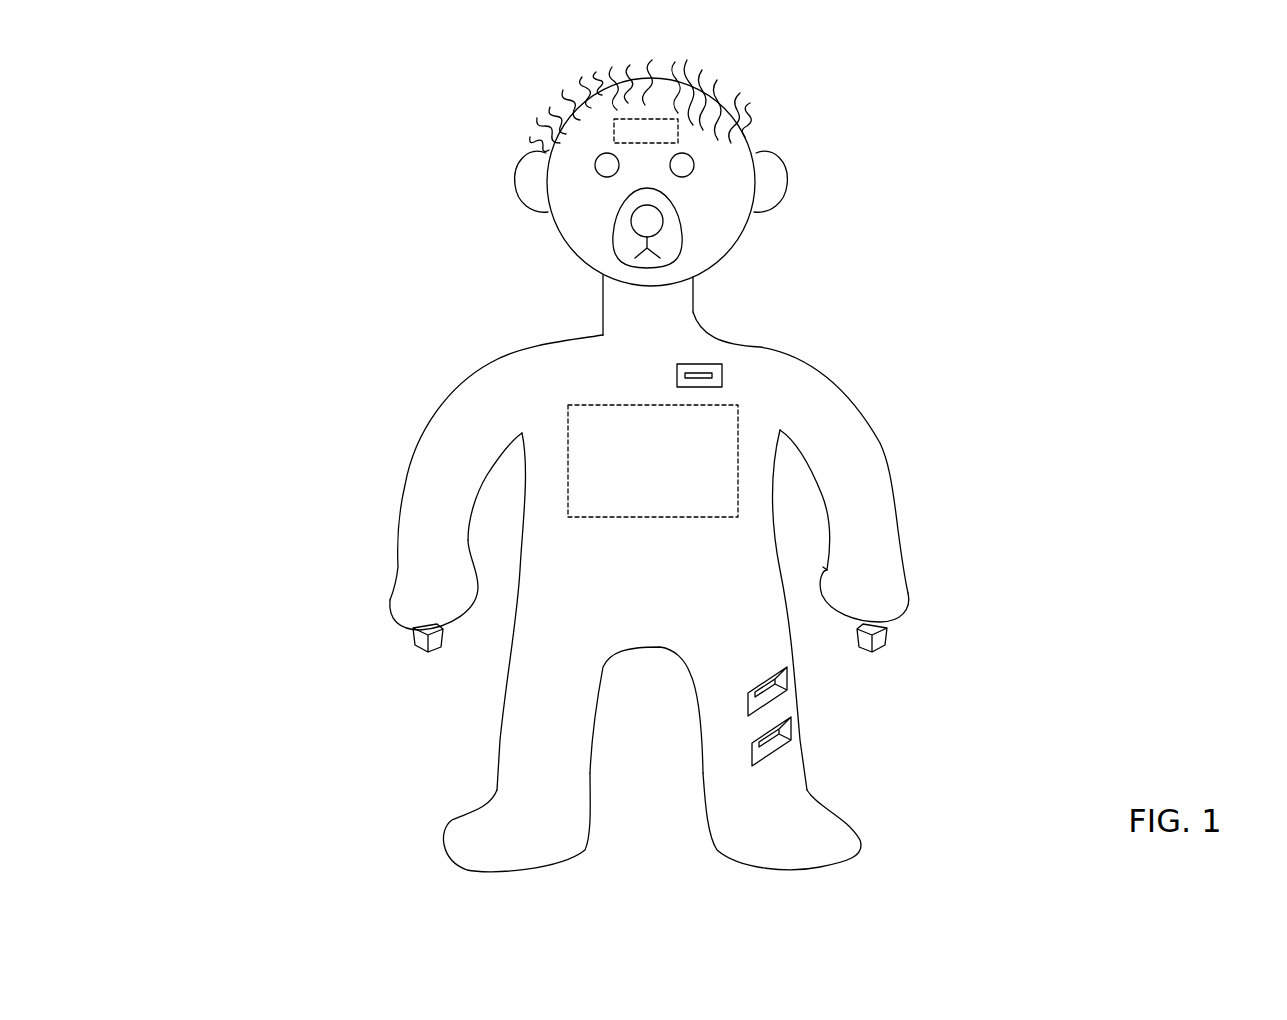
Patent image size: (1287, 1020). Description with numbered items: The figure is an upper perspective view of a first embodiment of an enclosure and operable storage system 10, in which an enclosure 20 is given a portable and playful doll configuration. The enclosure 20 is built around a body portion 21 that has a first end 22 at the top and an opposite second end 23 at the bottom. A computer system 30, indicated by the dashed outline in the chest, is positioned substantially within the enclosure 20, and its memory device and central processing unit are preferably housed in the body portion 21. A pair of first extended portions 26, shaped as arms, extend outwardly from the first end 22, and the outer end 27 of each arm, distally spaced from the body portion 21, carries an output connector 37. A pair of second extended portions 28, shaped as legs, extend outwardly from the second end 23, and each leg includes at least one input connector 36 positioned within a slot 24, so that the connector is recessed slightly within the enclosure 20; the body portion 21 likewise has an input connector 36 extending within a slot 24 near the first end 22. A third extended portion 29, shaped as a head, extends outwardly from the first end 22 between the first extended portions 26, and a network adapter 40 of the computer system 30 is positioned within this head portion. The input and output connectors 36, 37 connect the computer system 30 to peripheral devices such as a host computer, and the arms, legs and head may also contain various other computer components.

The enclosure and operable storage system 10 is at (255, 172).
The enclosure 20 is at (890, 440).
The body portion 21 is at (658, 563).
The first end 22 is at (650, 358).
The second end 23 is at (647, 605).
The slot 24 is at (723, 378).
The first extended portions 26 is at (418, 495).
The outer end 27 is at (402, 602).
The second extended portions 28 is at (455, 836).
The third extended portion 29 is at (560, 142).
The computer system 30 is at (555, 416).
The input connector 36 is at (706, 372).
The output connector 37 is at (421, 652).
The network adapter 40 is at (690, 138).